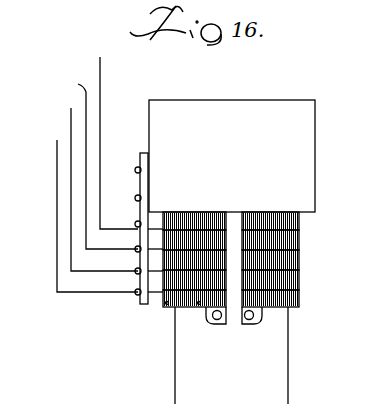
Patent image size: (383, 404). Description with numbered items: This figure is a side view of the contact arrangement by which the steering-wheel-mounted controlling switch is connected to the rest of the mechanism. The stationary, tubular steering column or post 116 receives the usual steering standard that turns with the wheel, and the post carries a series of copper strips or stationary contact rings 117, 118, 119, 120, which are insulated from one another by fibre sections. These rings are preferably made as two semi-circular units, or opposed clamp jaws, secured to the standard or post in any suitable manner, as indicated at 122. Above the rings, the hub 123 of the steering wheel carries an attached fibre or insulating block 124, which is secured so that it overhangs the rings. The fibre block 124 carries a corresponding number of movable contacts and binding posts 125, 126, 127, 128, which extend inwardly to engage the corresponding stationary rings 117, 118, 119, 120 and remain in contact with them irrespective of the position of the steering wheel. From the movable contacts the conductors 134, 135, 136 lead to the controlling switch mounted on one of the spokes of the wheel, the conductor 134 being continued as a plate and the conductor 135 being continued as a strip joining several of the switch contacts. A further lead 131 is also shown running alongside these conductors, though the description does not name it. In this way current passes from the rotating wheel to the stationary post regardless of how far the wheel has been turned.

The steering column or post 116 is at (271, 389).
The contact ring 117 is at (300, 230).
The contact ring 118 is at (300, 250).
The contact ring 119 is at (300, 272).
The contact ring 120 is at (300, 292).
The clamp jaw securing means 122 is at (247, 324).
The hub 123 is at (298, 125).
The fibre or insulating block 124 is at (143, 153).
The movable contact and binding post 125 is at (135, 225).
The movable contact and binding post 126 is at (136, 248).
The movable contact and binding post 127 is at (136, 270).
The movable contact and binding post 128 is at (136, 291).
The lead wire 131 is at (58, 153).
The conductor 134 is at (101, 66).
The conductor 135 is at (92, 154).
The conductor 136 is at (72, 116).